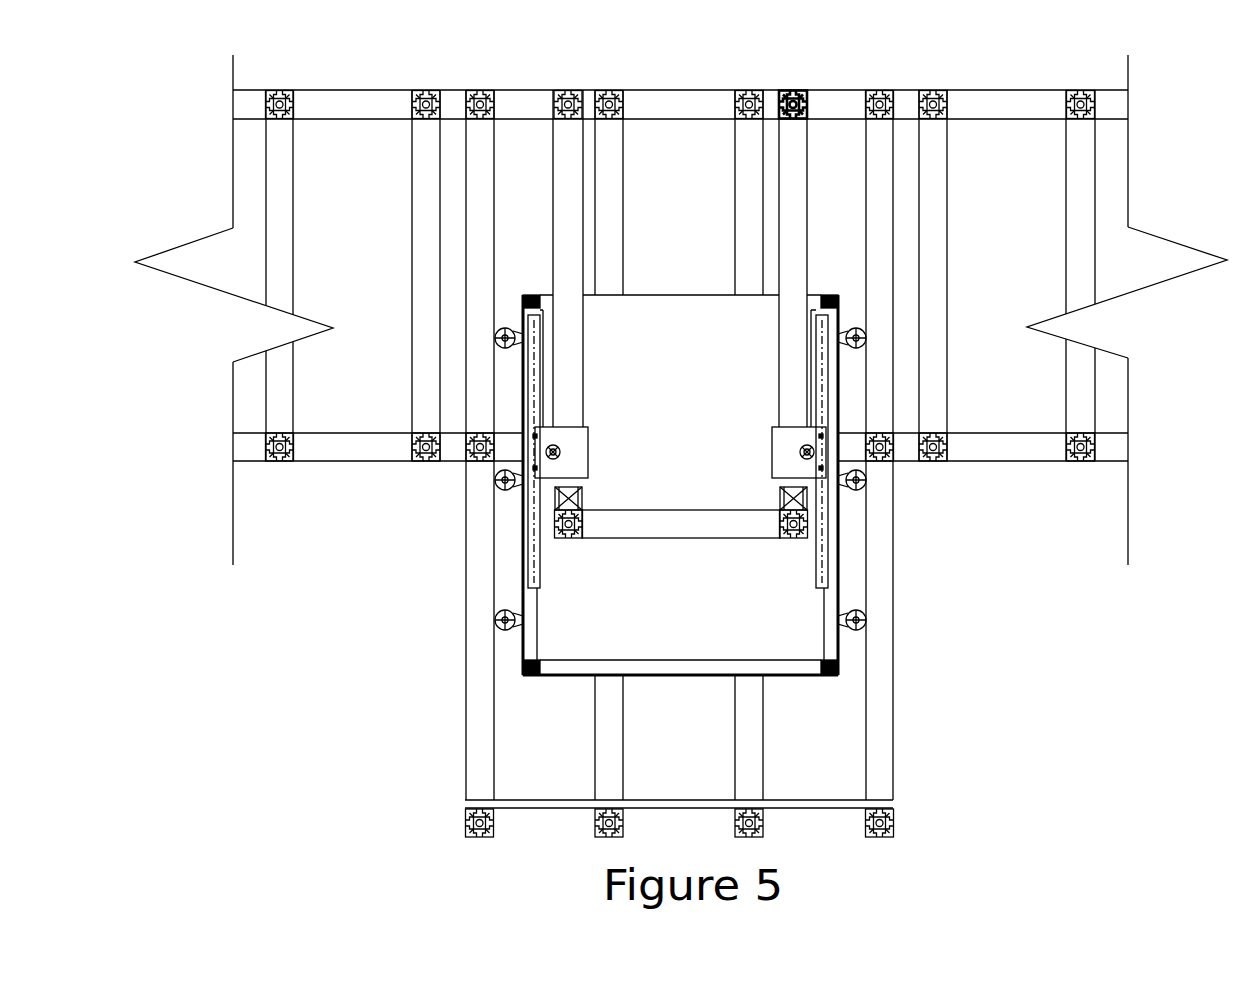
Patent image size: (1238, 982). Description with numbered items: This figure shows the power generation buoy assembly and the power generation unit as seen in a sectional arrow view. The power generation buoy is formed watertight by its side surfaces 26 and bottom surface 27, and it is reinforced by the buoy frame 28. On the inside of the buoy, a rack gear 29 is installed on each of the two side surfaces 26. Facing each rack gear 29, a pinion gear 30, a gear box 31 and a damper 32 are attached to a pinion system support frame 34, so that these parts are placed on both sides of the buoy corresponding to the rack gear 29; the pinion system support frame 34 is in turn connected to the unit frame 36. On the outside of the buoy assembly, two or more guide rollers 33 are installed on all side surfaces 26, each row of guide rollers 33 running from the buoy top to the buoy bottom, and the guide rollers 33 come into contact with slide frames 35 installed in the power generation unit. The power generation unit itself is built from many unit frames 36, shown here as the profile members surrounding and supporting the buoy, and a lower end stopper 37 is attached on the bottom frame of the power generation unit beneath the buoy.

The side surface 26 is at (660, 645).
The bottom surface 27 is at (644, 677).
The buoy frame 28 is at (523, 298).
The rack gear 29 is at (545, 407).
The pinion gear 30 is at (557, 443).
The gear box 31 is at (583, 458).
The damper 32 is at (582, 510).
The guide roller 33 is at (860, 333).
The pinion system support frame 34 is at (792, 90).
The slide frame 35 is at (745, 752).
The unit frame 36 is at (662, 100).
The lower end stopper 37 is at (523, 798).